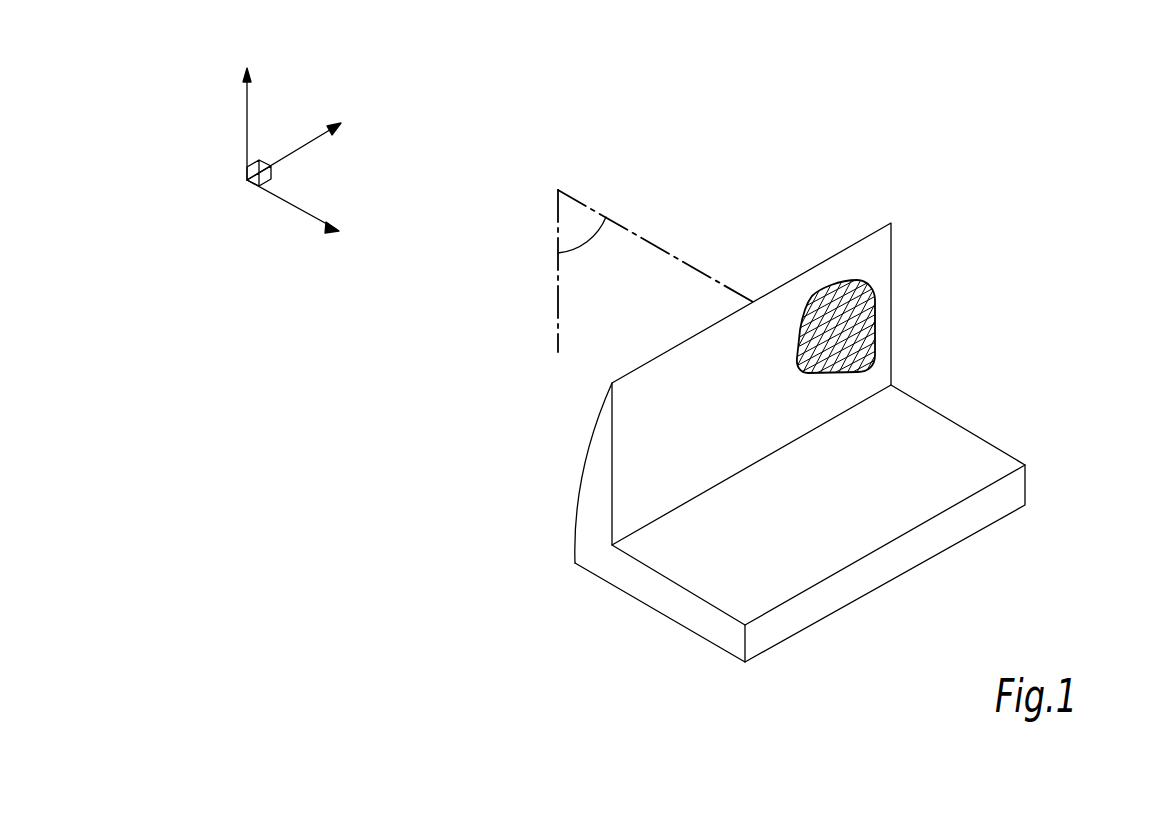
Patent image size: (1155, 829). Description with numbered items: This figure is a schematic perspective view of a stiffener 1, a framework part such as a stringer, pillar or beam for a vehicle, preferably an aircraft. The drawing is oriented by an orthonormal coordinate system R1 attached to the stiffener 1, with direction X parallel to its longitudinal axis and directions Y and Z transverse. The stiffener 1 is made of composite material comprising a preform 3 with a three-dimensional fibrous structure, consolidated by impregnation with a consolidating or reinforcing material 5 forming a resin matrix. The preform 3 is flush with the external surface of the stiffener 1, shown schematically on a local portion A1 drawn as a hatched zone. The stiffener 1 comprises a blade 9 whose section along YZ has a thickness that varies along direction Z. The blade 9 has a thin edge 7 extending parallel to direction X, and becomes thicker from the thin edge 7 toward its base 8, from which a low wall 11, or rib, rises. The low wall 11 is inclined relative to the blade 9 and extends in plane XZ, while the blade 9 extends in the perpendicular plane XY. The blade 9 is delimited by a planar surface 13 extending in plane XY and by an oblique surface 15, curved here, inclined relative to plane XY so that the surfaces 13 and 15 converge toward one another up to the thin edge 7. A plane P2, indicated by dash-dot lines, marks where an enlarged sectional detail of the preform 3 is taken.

The stiffener 1 is at (1008, 260).
The preform 3 is at (835, 313).
The consolidating or reinforcing material 5 is at (927, 463).
The thin edge 7 is at (640, 363).
The base 8 is at (590, 513).
The blade 9 is at (605, 431).
The low wall 11 is at (763, 557).
The planar surface 13 is at (751, 384).
The oblique surface 15 is at (583, 473).
The orthonormal coordinate system R1 is at (293, 147).
The plane P2 is at (655, 271).
The local portion A1 is at (833, 290).